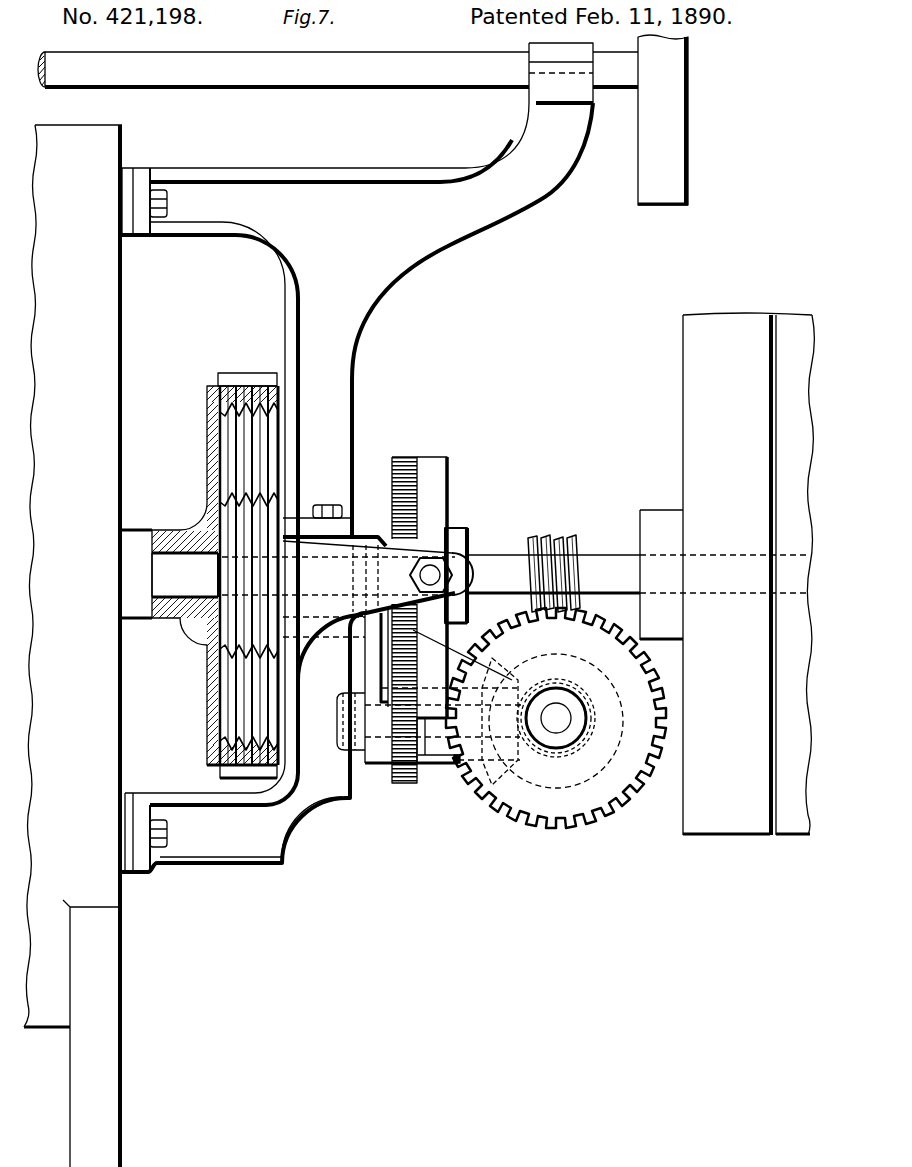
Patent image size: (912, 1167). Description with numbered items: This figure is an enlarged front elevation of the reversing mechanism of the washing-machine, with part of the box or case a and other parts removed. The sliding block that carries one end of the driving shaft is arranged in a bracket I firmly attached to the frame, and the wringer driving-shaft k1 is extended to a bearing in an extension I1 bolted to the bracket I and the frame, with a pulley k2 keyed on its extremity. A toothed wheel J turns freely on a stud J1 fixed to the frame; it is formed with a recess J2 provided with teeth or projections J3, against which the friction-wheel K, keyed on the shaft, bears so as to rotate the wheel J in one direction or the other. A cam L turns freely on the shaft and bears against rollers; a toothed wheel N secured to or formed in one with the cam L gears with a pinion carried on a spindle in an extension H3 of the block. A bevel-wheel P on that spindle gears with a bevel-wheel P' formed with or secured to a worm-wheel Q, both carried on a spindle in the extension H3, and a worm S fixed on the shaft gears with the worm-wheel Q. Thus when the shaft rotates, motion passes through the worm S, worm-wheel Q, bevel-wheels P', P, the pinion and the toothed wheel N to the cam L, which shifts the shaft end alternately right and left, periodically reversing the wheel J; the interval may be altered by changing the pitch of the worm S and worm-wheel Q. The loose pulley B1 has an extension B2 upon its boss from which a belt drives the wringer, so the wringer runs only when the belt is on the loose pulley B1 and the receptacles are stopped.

The cylindrical box or case a is at (73, 646).
The driving-shaft of the wringer k1 is at (338, 69).
The pulley k2 is at (663, 120).
The bracket I is at (287, 520).
The extension I1 is at (357, 290).
The toothed wheel J is at (207, 706).
The stud J1 is at (185, 575).
The recess J2 is at (242, 682).
The teeth or projections J3 is at (230, 405).
The friction-wheel K is at (262, 595).
The toothed wheel N is at (410, 460).
The cam L is at (447, 472).
The worm S is at (552, 540).
The loose pulley B1 is at (748, 574).
The extension B2 is at (661, 575).
The extension of the block H3 is at (398, 685).
The miter-wheel or bevel-wheel P is at (443, 707).
The miter-wheel or bevel-wheel P' is at (556, 721).
The worm-wheel Q is at (556, 718).